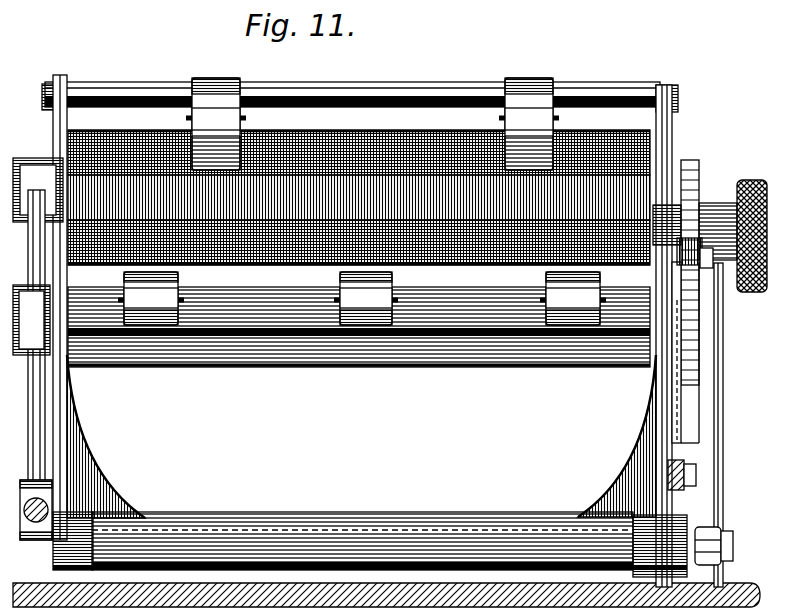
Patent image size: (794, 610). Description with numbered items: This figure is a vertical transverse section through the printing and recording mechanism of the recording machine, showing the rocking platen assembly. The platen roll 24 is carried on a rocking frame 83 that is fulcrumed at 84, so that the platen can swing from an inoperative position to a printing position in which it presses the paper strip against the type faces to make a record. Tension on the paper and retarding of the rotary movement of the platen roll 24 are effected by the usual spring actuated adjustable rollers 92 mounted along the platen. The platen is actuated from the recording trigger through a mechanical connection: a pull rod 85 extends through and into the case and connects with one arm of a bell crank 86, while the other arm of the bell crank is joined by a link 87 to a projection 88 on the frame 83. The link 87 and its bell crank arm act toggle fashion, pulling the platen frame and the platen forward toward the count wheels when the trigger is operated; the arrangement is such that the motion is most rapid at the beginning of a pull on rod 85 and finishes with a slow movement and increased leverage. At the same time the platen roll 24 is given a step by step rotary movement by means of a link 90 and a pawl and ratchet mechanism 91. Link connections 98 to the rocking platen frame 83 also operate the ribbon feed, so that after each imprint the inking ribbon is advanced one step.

The platen roll 24 is at (370, 140).
The spring actuated adjustable rollers 92 is at (362, 201).
The rocking frame 83 is at (64, 400).
The fulcrum 84 is at (706, 534).
The pull rod 85 is at (46, 542).
The bell crank 86 is at (36, 408).
The link 87 is at (30, 356).
The projection 88 is at (45, 224).
The link 90 is at (722, 386).
The pawl and ratchet mechanism 91 is at (692, 263).
The link connections 98 is at (694, 473).